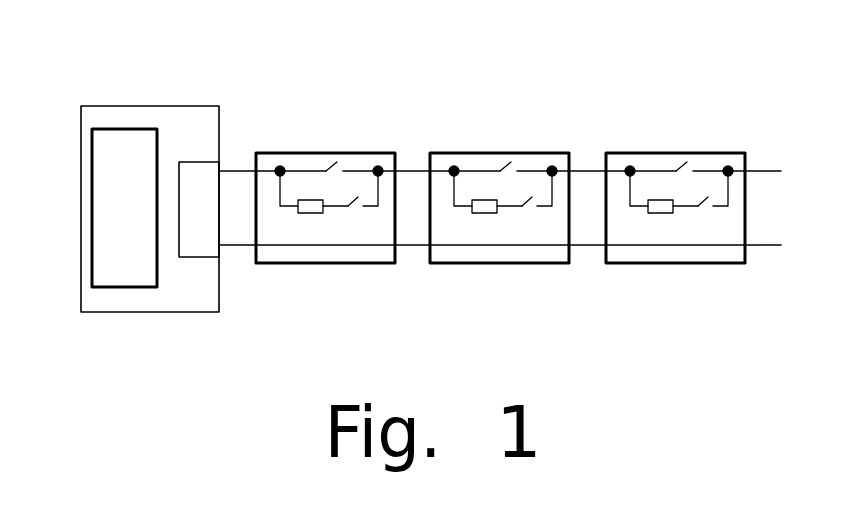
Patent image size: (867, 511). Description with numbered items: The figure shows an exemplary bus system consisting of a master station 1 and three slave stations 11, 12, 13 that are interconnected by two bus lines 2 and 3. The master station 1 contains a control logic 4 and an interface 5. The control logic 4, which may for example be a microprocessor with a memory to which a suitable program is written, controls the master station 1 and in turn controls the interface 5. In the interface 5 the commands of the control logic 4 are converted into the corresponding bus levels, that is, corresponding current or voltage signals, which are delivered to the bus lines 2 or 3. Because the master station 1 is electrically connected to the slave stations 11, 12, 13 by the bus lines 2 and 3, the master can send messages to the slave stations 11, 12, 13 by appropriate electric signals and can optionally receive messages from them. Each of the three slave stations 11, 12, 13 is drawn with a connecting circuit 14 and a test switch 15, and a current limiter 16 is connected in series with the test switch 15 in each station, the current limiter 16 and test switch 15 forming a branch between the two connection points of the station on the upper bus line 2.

The master station 1 is at (150, 105).
The bus line 2 is at (245, 170).
The bus line 3 is at (246, 247).
The control logic 4 is at (105, 192).
The interface 5 is at (203, 170).
The slave station 11 is at (290, 153).
The slave station 12 is at (464, 153).
The slave station 13 is at (640, 153).
The connecting circuit 14 is at (330, 167).
The test switch 15 is at (356, 213).
The current limiter 16 is at (310, 213).